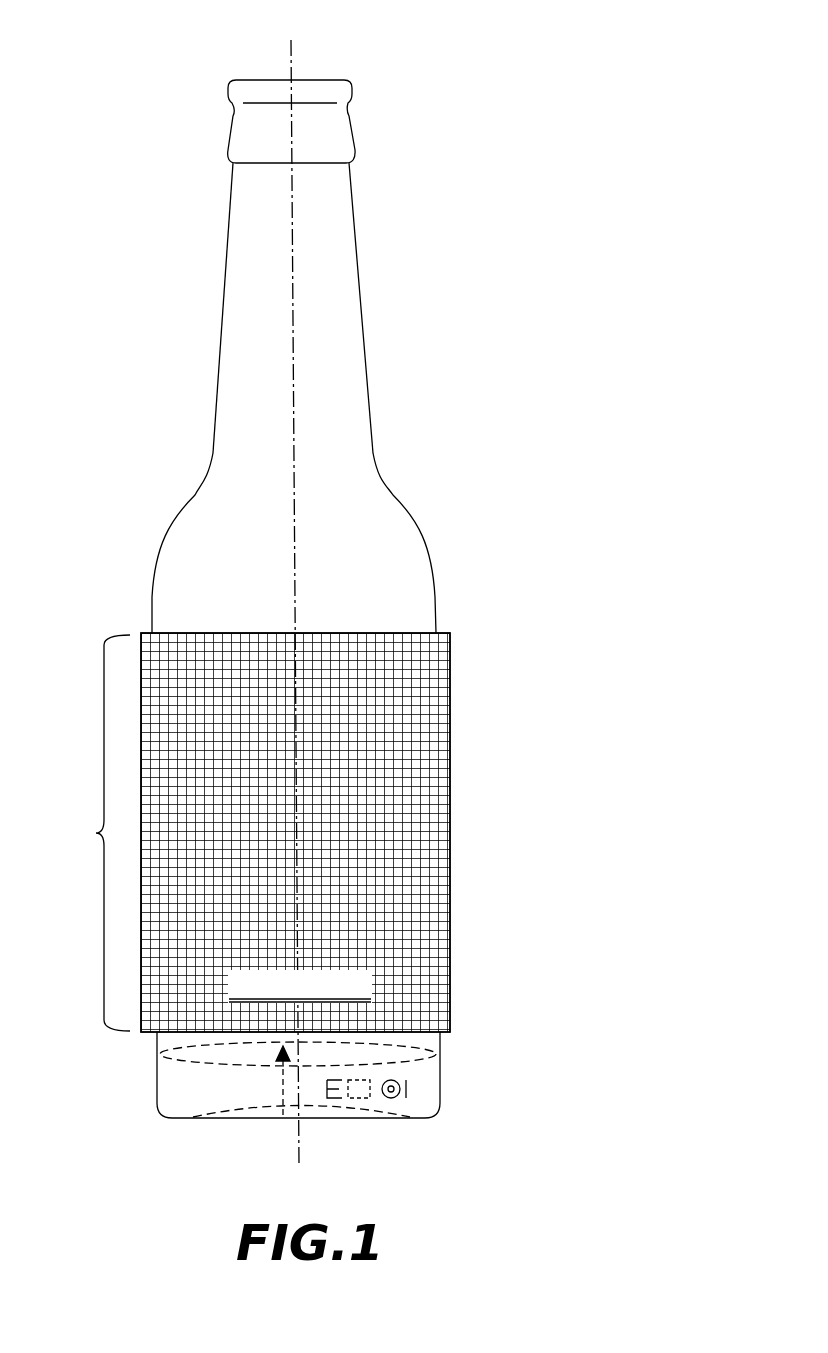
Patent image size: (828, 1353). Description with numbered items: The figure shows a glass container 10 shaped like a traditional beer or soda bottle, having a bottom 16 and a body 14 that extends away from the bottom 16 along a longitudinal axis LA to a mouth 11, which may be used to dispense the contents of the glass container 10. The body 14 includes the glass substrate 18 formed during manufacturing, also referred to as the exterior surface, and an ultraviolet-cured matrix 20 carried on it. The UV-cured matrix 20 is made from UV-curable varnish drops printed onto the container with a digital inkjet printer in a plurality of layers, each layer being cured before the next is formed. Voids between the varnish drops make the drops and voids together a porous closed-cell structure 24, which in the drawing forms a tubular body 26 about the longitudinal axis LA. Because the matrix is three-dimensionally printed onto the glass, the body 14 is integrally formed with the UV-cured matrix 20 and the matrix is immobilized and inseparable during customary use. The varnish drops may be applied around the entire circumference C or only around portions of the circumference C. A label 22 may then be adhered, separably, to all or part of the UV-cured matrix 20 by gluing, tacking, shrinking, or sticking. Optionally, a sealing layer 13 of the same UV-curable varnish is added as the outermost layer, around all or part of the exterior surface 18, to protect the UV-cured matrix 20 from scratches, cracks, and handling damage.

The glass container 10 is at (533, 200).
The mouth 11 is at (310, 78).
The sealing layer 13 is at (450, 958).
The body 14 is at (222, 267).
The bottom 16 is at (240, 1120).
The glass substrate 18 is at (376, 465).
The UV-cured matrix 20 is at (450, 685).
The label 22 is at (300, 986).
The closed-cell structure 24 is at (433, 830).
The tubular body 26 is at (96, 833).
The longitudinal axis LA is at (293, 298).
The circumference C is at (192, 1067).